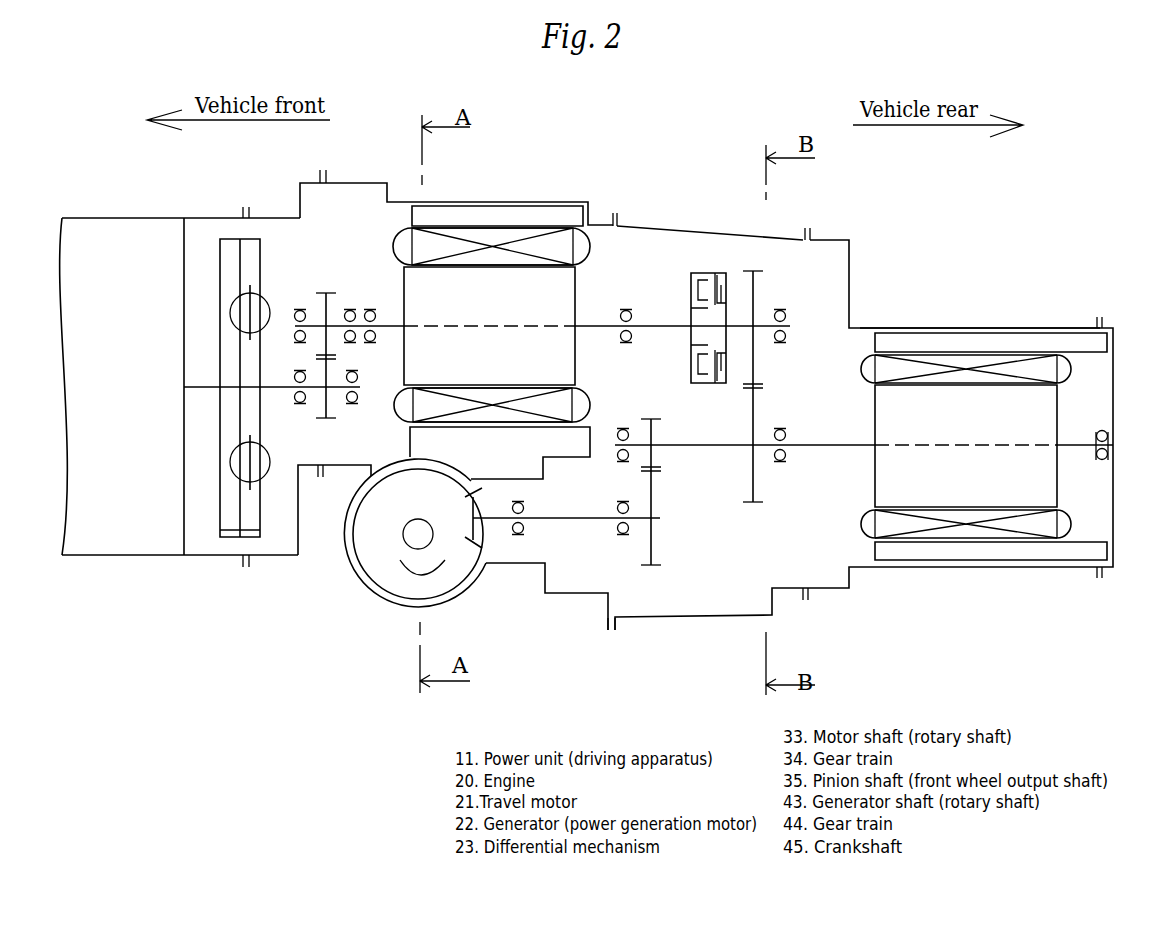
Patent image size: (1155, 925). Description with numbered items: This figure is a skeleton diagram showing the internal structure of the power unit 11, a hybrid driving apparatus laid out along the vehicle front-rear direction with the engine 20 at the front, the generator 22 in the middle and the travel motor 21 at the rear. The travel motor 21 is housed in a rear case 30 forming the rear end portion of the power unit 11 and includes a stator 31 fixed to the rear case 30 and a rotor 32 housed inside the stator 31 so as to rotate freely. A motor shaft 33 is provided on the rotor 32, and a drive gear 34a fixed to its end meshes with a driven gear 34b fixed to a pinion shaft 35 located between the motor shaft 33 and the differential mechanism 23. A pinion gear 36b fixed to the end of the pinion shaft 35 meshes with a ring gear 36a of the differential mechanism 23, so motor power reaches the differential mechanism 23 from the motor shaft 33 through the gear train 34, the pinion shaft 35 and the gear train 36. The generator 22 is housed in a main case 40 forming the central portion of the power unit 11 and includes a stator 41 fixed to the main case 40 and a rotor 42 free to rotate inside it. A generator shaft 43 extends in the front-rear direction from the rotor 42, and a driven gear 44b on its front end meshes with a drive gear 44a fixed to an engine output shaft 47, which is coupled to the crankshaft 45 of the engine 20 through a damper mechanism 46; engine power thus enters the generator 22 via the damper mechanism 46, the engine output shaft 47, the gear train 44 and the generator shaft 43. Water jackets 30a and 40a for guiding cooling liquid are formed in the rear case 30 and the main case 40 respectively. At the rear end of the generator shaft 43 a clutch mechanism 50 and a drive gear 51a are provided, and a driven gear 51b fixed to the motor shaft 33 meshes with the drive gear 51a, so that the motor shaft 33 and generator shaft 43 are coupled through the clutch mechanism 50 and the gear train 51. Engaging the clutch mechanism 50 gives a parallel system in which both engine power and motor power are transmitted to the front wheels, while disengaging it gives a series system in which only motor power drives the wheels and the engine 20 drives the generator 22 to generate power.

The power unit 11 is at (126, 161).
The engine 20 is at (128, 515).
The travel motor 21 is at (1078, 246).
The generator 22 is at (598, 121).
The differential mechanism 23 is at (380, 586).
The rear case 30 is at (868, 328).
The water jacket 30a is at (917, 332).
The stator 31 is at (1033, 368).
The rotor 32 is at (988, 417).
The motor shaft 33 is at (830, 443).
The gear train 34 is at (645, 568).
The drive gear 34a is at (650, 417).
The driven gear 34b is at (653, 567).
The pinion shaft 35 is at (577, 522).
The gear train 36 is at (489, 545).
The ring gear 36a is at (410, 588).
The pinion gear 36b is at (467, 540).
The main case 40 is at (383, 183).
The water jacket 40a is at (470, 208).
The stator 41 is at (555, 245).
The rotor 42 is at (510, 290).
The generator shaft 43 is at (392, 321).
The gear train 44 is at (328, 294).
The drive gear 44a is at (330, 420).
The driven gear 44b is at (323, 292).
The crankshaft 45 is at (200, 385).
The damper mechanism 46 is at (225, 535).
The engine output shaft 47 is at (277, 390).
The clutch mechanism 50 is at (701, 274).
The gear train 51 is at (749, 272).
The drive gear 51a is at (763, 270).
The driven gear 51b is at (745, 505).